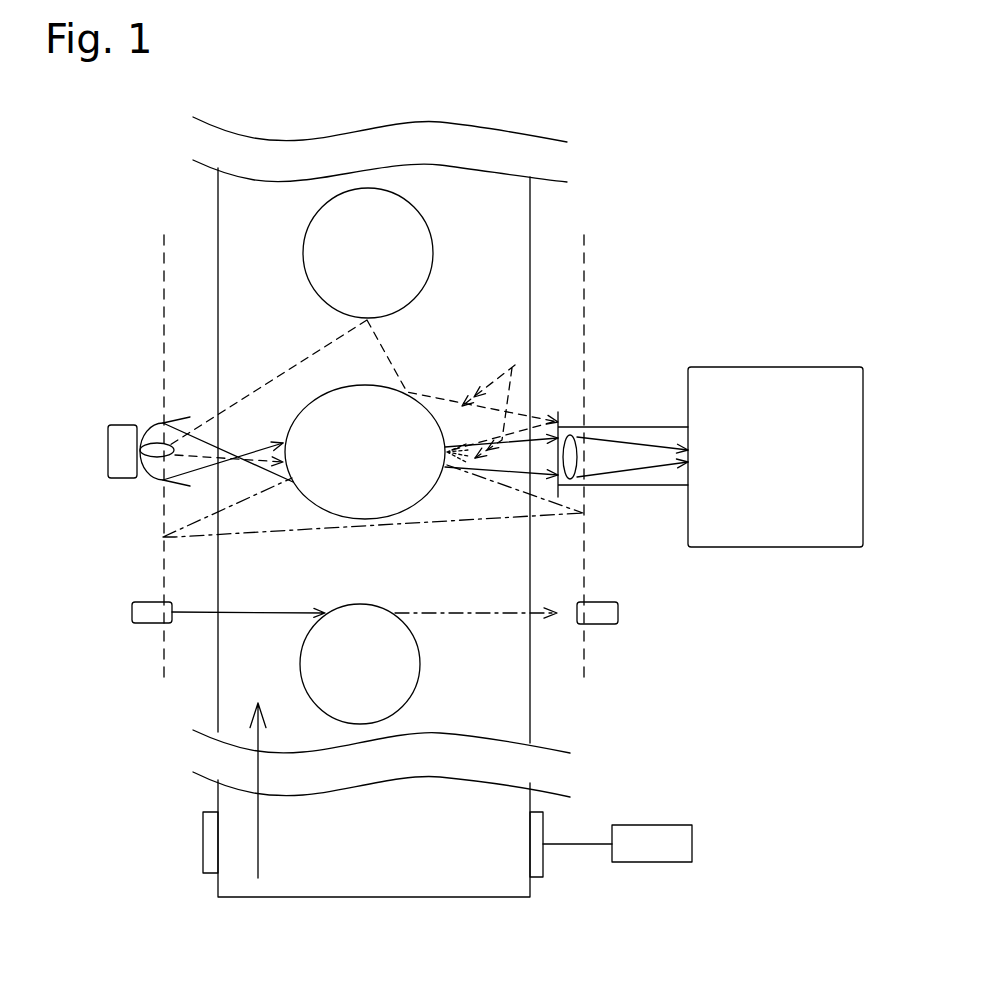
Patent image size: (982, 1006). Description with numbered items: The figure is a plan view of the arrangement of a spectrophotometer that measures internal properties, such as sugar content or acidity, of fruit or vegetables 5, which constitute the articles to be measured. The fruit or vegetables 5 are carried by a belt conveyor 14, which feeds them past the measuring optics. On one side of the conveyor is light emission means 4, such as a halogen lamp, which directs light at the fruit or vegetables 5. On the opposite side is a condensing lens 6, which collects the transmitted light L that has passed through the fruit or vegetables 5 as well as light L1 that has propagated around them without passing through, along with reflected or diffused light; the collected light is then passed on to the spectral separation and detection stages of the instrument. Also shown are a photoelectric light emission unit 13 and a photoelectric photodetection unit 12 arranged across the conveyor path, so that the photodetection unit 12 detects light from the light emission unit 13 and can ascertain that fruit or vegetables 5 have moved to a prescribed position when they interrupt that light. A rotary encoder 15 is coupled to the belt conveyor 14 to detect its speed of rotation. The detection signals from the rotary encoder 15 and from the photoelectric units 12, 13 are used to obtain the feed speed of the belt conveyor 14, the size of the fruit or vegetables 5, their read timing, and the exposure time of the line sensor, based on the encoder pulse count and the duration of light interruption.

The light emission means 4 is at (109, 389).
The fruit or vegetables 5 is at (388, 398).
The condensing lens 6 is at (577, 457).
The photodetection unit 12 is at (608, 624).
The photoelectric light emission unit 13 is at (142, 623).
The belt conveyor 14 is at (445, 897).
The rotary encoder 15 is at (647, 862).
The transmitted light L is at (503, 465).
The light that has not passed through the fruit or vegetables L1 is at (496, 394).